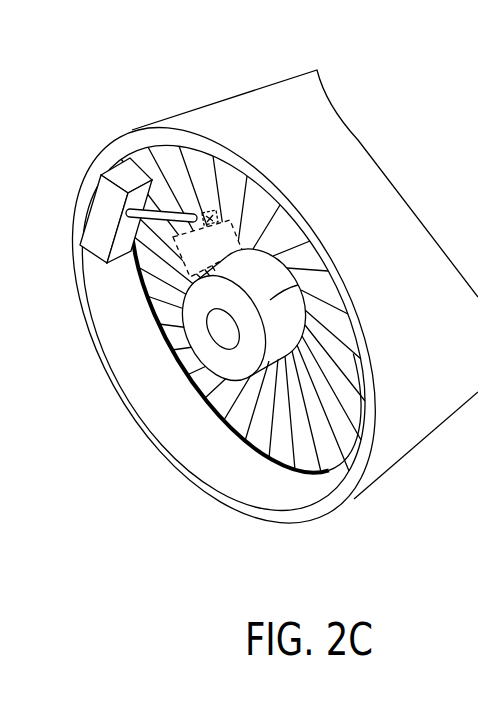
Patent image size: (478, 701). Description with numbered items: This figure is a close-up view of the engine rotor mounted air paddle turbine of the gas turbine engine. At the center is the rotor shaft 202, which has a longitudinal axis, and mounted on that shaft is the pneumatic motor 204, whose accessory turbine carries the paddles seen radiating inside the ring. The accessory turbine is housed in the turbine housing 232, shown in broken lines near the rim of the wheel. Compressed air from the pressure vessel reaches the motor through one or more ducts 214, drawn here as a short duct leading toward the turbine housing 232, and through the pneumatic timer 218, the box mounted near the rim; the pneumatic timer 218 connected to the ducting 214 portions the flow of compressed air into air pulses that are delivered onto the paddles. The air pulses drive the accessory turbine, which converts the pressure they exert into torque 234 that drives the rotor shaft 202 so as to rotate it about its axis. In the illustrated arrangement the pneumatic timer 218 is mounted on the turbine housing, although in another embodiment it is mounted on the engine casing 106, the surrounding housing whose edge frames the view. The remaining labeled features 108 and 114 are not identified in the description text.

The engine casing 106 is at (237, 93).
The fan 108 is at (335, 360).
The central opening 114 is at (230, 349).
The rotor shaft 202 is at (280, 297).
The pneumatic motor 204 is at (152, 278).
The ducts 214 is at (166, 198).
The pneumatic timer 218 is at (93, 208).
The turbine housing 232 is at (247, 232).
The torque 234 is at (212, 220).